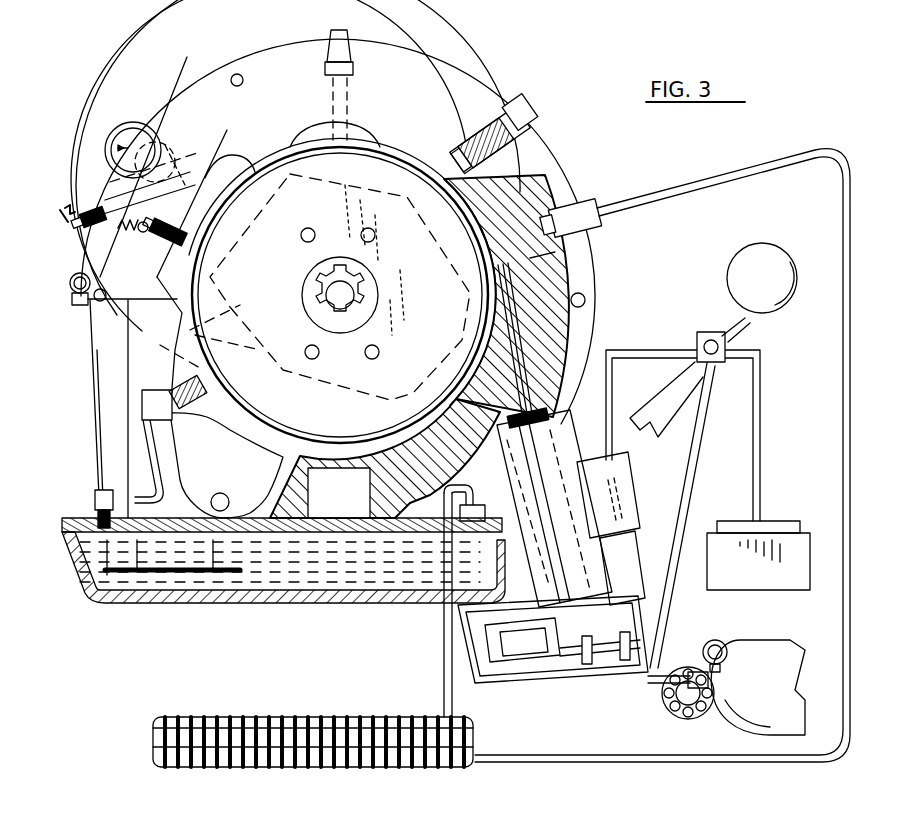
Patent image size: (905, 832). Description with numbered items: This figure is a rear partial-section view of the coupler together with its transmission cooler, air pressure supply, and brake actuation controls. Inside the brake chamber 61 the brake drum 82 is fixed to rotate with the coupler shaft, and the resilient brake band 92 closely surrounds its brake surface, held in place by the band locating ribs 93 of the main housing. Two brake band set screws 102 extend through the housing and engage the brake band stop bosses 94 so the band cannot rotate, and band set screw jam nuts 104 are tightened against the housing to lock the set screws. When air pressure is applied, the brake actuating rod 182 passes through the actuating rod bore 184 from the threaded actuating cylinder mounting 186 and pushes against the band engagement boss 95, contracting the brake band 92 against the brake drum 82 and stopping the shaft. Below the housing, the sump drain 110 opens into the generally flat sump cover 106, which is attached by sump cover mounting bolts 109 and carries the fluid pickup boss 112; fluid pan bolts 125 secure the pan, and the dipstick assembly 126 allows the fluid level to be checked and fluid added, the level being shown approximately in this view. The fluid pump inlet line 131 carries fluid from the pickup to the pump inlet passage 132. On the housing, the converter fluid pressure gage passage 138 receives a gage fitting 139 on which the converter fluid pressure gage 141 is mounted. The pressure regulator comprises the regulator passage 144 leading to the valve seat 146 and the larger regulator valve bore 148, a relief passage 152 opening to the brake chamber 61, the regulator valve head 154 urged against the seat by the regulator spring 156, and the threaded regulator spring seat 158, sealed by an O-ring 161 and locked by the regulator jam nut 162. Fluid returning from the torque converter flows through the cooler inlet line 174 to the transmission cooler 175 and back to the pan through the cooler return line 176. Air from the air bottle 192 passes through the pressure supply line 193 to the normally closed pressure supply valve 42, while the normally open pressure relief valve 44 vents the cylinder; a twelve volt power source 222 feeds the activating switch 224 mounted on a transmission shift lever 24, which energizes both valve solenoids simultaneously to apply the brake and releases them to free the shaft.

The transmission shift lever 24 is at (738, 288).
The pressure supply valve 42 is at (530, 605).
The pressure relief valve 44 is at (635, 515).
The brake chamber 61 is at (195, 98).
The brake drum 82 is at (372, 167).
The brake band 92 is at (300, 70).
The band locating ribs 93 is at (268, 143).
The brake band stop bosses 94 is at (530, 167).
The band engagement boss 95 is at (555, 252).
The brake band set screws 102 is at (505, 112).
The band set screw jam nuts 104 is at (535, 118).
The sump cover 106 is at (415, 545).
The sump cover mounting bolts 109 is at (280, 545).
The sump drain 110 is at (340, 495).
The fluid pickup boss 112 is at (140, 575).
The fluid pan bolts 125 is at (92, 512).
The dipstick assembly 126 is at (95, 400).
The fluid pump inlet line 131 is at (145, 440).
The pump inlet passage 132 is at (185, 348).
The converter fluid pressure gage passage 138 is at (160, 96).
The gage fitting 139 is at (155, 118).
The converter fluid pressure gage 141 is at (112, 130).
The regulator passage 144 is at (98, 163).
The regulator valve seat 146 is at (105, 178).
The regulator valve bore 148 is at (105, 200).
The relief passage 152 is at (210, 268).
The regulator valve head 154 is at (214, 395).
The regulator spring 156 is at (157, 341).
The regulator spring seat 158 is at (139, 235).
The O-ring 161 is at (96, 234).
The regulator jam nut 162 is at (69, 218).
The cooler inlet line 174 is at (655, 188).
The transmission cooler 175 is at (265, 712).
The cooler return line 176 is at (443, 680).
The brake actuating rod 182 is at (558, 290).
The actuating rod bore 184 is at (540, 322).
The actuating cylinder mounting 186 is at (548, 424).
The air bottle 192 is at (760, 660).
The pressure supply line 193 is at (640, 680).
The power source 222 is at (785, 530).
The activating switch 224 is at (700, 335).